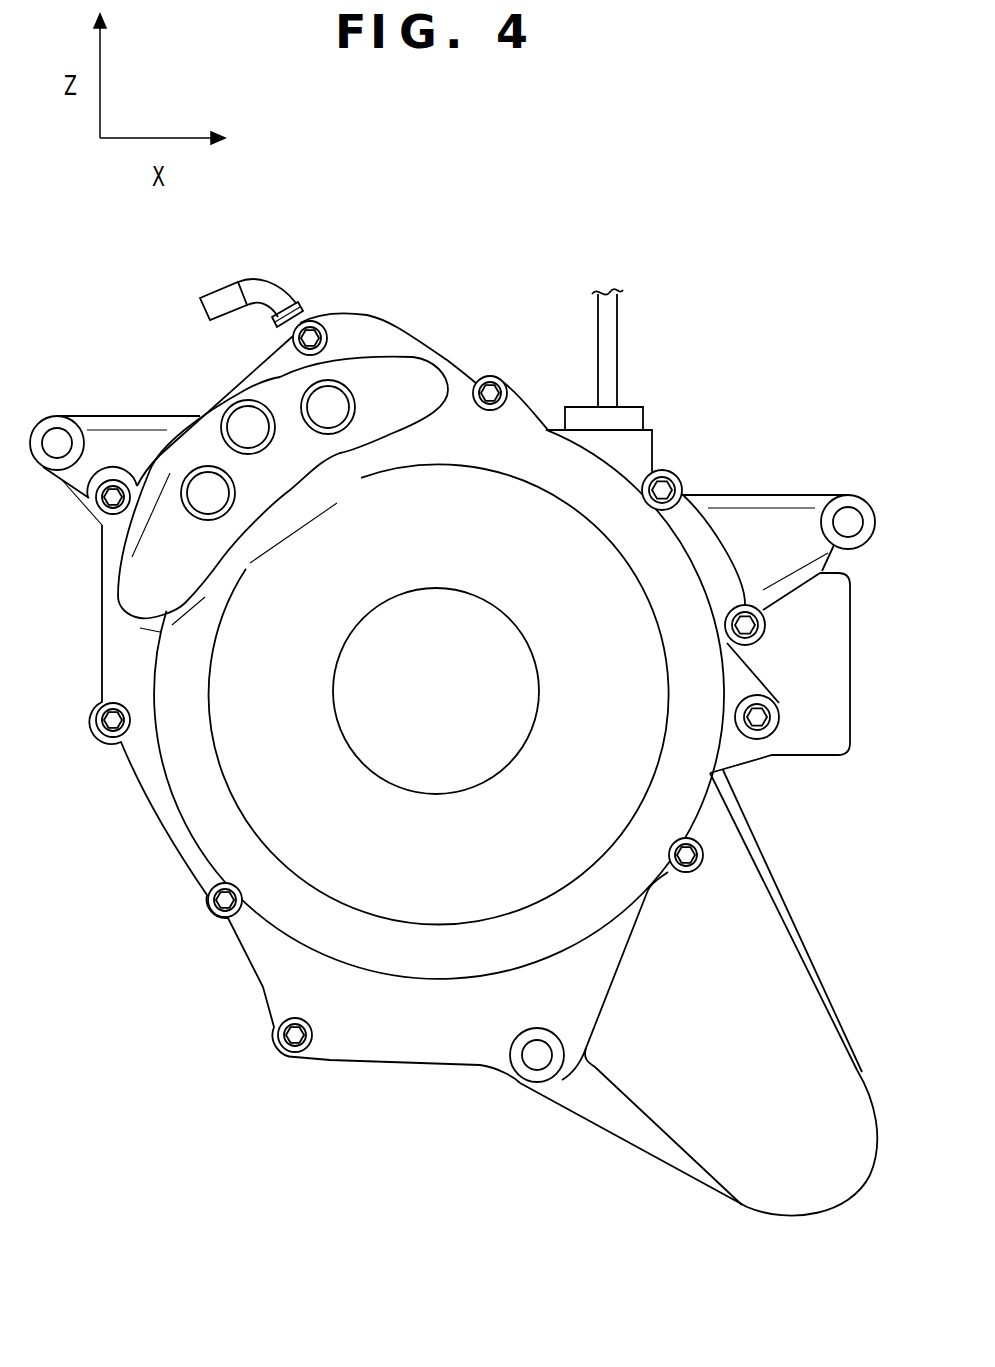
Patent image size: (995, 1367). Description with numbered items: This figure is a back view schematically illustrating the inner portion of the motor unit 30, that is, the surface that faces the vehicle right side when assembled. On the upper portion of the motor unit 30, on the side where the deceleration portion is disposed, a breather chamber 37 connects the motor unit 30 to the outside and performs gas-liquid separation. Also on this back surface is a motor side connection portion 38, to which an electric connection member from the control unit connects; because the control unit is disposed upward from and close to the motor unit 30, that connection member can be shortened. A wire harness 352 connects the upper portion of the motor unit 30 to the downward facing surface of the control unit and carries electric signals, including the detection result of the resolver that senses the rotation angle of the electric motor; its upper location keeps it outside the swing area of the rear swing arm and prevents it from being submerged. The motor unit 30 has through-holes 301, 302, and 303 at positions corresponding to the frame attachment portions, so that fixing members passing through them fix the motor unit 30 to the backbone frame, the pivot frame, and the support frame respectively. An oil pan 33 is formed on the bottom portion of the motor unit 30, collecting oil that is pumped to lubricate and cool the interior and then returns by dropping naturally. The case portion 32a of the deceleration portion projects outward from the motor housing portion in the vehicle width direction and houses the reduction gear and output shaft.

The motor unit 30 is at (726, 304).
The breather chamber 37 is at (407, 323).
The motor side connection portion 38 is at (301, 403).
The wire harness 352 is at (617, 357).
The through-hole 301 is at (830, 502).
The through-hole 302 is at (513, 1077).
The through-hole 303 is at (53, 472).
The oil pan 33 is at (260, 988).
The case portion 32a is at (747, 1212).